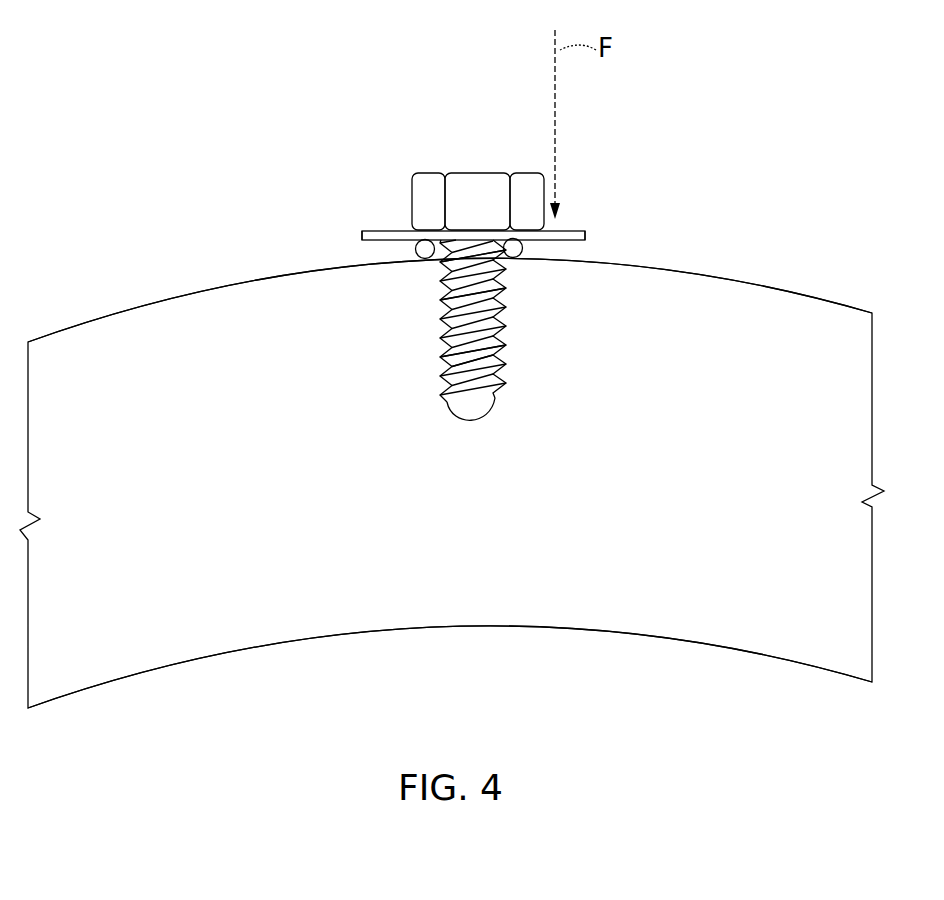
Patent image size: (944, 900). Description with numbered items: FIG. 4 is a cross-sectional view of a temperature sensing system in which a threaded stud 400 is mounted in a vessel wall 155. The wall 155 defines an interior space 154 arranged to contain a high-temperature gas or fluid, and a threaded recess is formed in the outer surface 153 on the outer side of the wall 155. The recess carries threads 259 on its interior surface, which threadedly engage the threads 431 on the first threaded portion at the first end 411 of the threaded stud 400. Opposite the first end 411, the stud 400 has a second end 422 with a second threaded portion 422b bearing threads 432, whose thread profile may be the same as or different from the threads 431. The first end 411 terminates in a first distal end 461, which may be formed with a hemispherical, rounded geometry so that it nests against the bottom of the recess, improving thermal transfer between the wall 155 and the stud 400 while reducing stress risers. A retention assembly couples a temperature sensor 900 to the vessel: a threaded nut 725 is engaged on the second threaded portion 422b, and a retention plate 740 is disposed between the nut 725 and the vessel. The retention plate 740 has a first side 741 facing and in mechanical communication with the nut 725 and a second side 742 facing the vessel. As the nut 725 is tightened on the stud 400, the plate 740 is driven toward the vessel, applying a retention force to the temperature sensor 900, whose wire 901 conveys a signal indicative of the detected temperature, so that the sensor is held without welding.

The outer surface 153 is at (140, 296).
The interior space 154 is at (488, 692).
The wall 155 is at (481, 505).
The threaded nut 725 is at (430, 175).
The retention plate 740 is at (382, 212).
The first side 741 is at (584, 230).
The second side 742 is at (362, 239).
The temperature sensor 900 is at (417, 257).
The wire 901 is at (524, 250).
The threaded stud 400 is at (498, 340).
The first end 411 is at (439, 397).
The second end 422 is at (446, 268).
The second threaded portion 422b is at (500, 297).
The threads 431 is at (503, 350).
The threads 432 is at (505, 262).
The threads 259 is at (441, 365).
The first distal end 461 is at (453, 411).